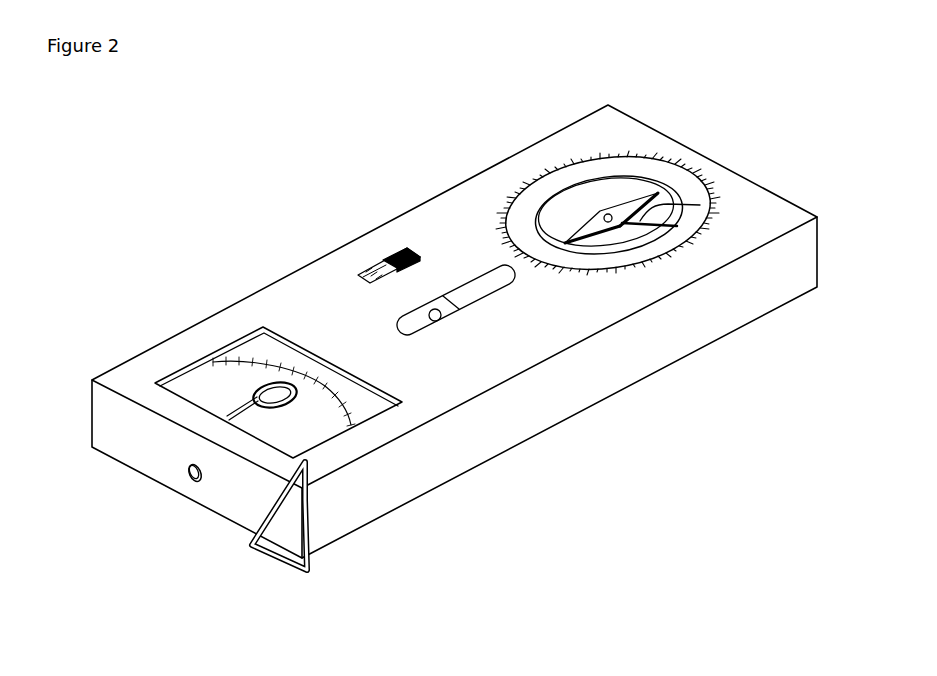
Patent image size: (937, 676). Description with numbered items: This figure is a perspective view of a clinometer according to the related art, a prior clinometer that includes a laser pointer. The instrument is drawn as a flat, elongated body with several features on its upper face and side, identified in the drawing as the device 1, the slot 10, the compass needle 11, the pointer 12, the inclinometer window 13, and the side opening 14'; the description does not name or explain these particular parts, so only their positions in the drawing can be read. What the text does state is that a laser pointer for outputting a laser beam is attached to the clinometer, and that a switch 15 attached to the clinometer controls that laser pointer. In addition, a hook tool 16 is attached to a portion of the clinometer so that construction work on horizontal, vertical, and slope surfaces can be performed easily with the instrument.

The compass device 1 is at (303, 222).
The sighting slot 10 is at (470, 293).
The compass needle 11 is at (658, 194).
The index pointer 12 is at (700, 205).
The inclinometer window 13 is at (192, 385).
The side hole 14' is at (118, 482).
The switch 15 is at (395, 250).
The hook tool 16 is at (273, 558).